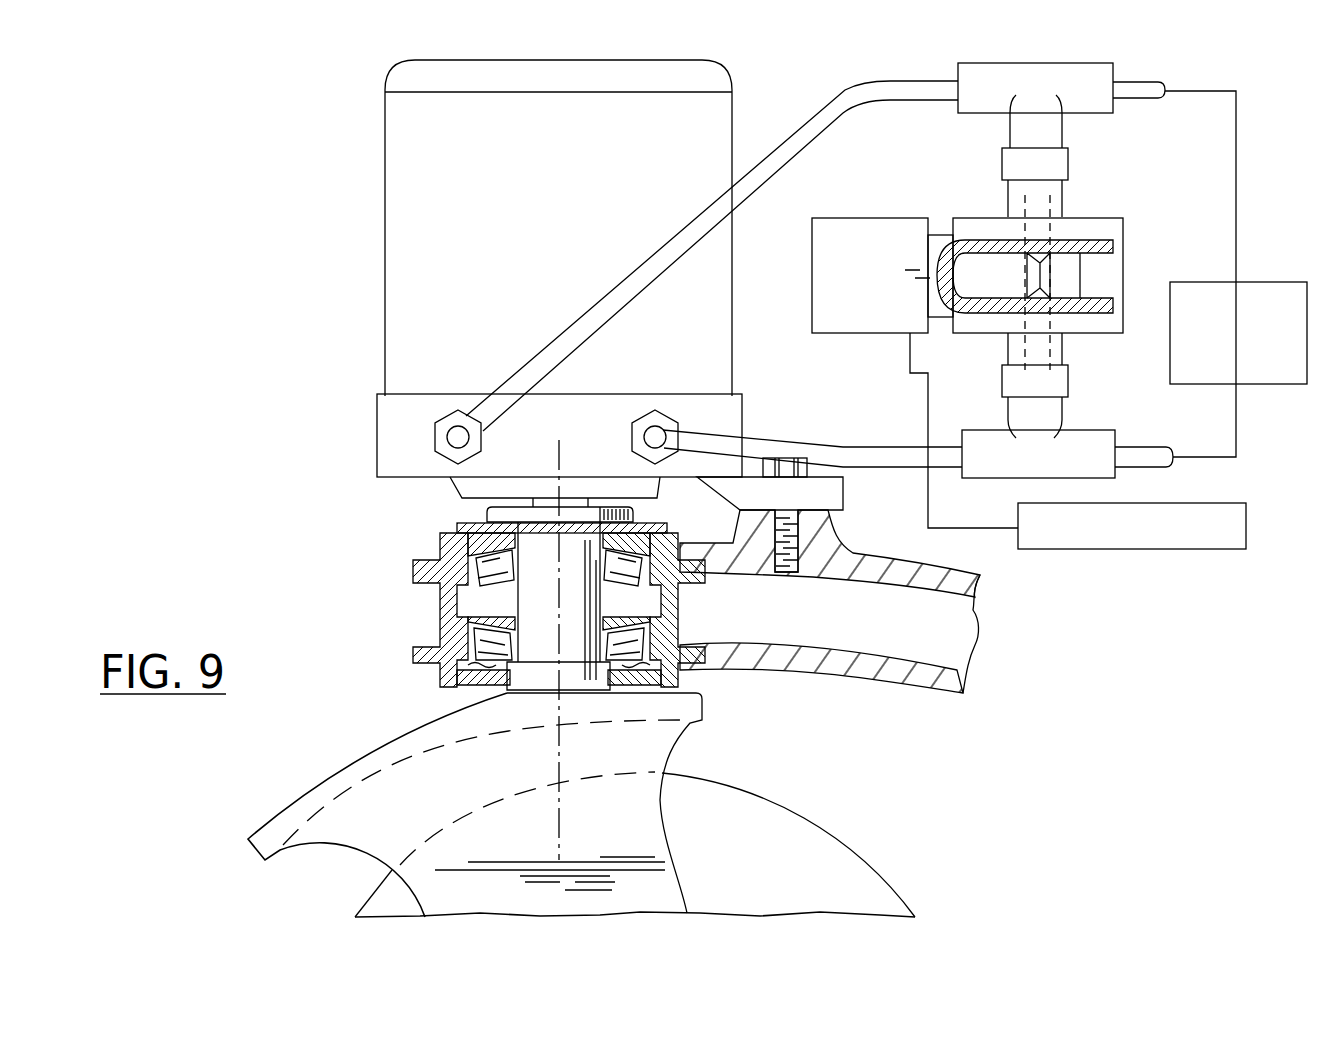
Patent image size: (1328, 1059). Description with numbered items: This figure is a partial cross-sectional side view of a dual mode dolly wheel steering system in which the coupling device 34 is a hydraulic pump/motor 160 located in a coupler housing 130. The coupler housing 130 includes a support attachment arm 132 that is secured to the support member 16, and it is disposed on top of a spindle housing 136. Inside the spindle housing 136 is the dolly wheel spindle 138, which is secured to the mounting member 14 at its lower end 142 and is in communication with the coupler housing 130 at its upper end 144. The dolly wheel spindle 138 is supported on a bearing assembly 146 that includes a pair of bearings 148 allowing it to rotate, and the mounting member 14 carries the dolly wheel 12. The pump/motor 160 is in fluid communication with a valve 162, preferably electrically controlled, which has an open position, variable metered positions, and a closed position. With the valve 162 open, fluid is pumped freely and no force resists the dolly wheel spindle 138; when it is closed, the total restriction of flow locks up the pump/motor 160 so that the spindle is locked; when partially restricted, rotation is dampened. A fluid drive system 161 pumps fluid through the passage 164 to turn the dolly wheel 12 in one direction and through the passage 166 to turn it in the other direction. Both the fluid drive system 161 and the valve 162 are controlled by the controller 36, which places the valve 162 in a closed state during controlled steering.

The dolly wheel 12 is at (808, 828).
The mounting member 14 is at (358, 765).
The support member 16 is at (947, 637).
The coupling device 34 is at (512, 283).
The controller 36 is at (1154, 549).
The coupler housing 130 is at (378, 168).
The support attachment arm 132 is at (843, 498).
The spindle housing 136 is at (440, 608).
The dolly wheel spindle 138 is at (530, 540).
The lower end 142 is at (540, 645).
The upper end 144 is at (580, 506).
The bearing assembly 146 is at (492, 595).
The bearings 148 is at (640, 637).
The hydraulic pump/motor 160 is at (718, 350).
The fluid drive system 161 is at (1263, 282).
The valve 162 is at (1070, 271).
The passage 164 is at (1085, 108).
The passage 166 is at (1087, 440).